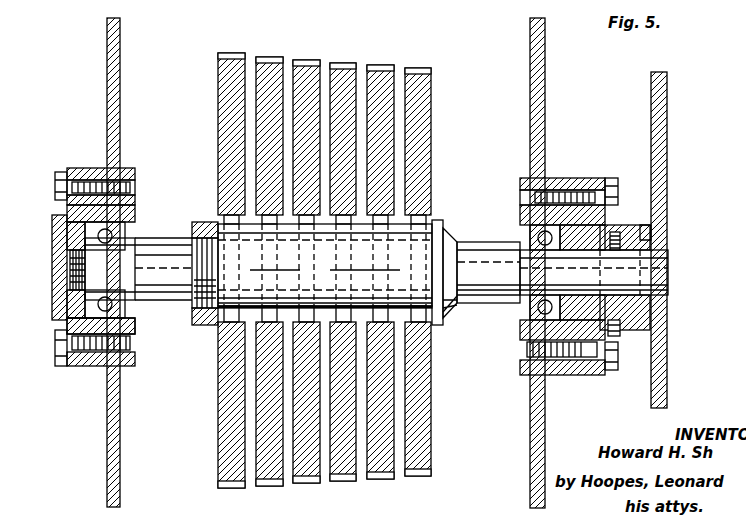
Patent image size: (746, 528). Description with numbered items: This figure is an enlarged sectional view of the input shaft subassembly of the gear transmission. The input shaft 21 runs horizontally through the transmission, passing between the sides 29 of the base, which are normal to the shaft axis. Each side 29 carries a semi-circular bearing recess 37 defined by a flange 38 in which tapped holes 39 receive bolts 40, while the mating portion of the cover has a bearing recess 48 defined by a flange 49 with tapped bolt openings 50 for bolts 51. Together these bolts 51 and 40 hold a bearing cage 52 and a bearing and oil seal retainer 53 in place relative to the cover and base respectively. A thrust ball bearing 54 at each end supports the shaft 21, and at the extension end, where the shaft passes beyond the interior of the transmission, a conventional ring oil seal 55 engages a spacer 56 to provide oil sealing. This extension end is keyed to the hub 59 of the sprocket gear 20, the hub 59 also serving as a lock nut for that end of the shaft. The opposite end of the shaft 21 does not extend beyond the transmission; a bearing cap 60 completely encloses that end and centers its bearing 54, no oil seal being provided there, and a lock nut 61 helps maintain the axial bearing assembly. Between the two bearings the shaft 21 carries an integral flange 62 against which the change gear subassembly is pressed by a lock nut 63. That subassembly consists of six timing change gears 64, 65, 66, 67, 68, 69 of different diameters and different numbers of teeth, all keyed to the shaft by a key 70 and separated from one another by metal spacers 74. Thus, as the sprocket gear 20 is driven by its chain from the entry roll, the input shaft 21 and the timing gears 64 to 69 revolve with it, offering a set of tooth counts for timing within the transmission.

The sprocket gear 20 is at (667, 130).
The input shaft 21 is at (668, 272).
The sides 29 is at (120, 436).
The semi-circular bearing recesses 37 is at (135, 330).
The flanges 38 is at (135, 362).
The tapped holes 39 is at (135, 352).
The bolts 40 is at (68, 362).
The bearing recesses 48 is at (135, 218).
The flanges 49 is at (135, 172).
The tapped bolt openings 50 is at (135, 192).
The bolts 51 is at (75, 182).
The bearing cage 52 is at (582, 220).
The bearing and oil seal retainer 53 is at (615, 205).
The thrust ball bearing 54 is at (120, 238).
The ring oil seal 55 is at (610, 322).
The spacer 56 is at (612, 236).
The hub 59 is at (664, 235).
The bearing cap 60 is at (60, 232).
The lock nut 61 is at (72, 285).
The integral flange 62 is at (438, 270).
The lock nut 63 is at (197, 225).
The change gear 64 is at (420, 80).
The change gear 65 is at (384, 80).
The change gear 66 is at (345, 80).
The change gear 67 is at (308, 78).
The change gear 68 is at (270, 72).
The change gear 69 is at (232, 70).
The key 70 is at (415, 235).
The metal spacers 74 is at (290, 306).